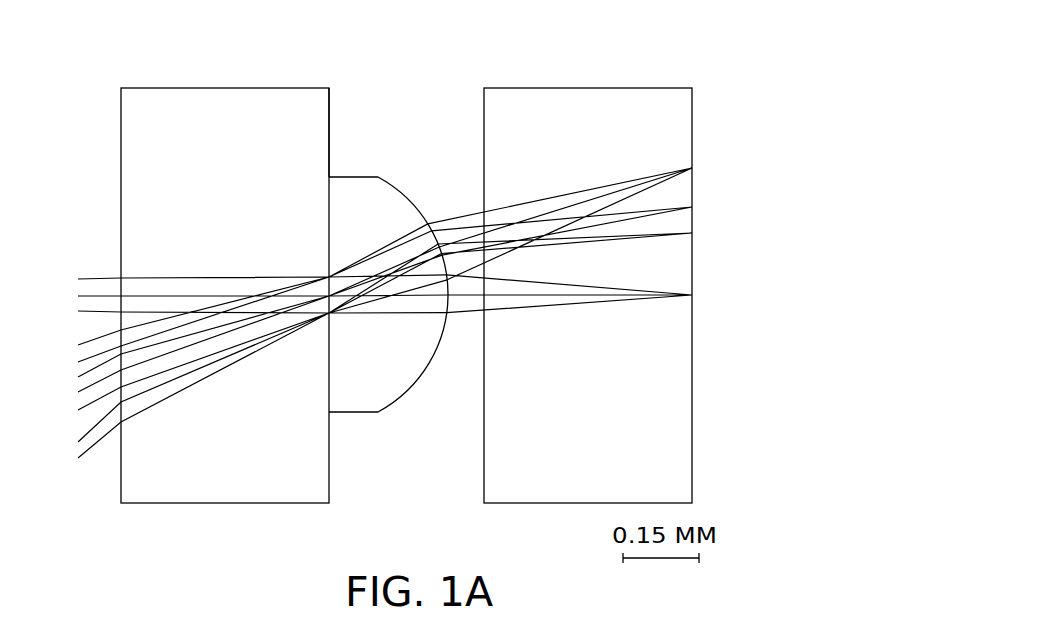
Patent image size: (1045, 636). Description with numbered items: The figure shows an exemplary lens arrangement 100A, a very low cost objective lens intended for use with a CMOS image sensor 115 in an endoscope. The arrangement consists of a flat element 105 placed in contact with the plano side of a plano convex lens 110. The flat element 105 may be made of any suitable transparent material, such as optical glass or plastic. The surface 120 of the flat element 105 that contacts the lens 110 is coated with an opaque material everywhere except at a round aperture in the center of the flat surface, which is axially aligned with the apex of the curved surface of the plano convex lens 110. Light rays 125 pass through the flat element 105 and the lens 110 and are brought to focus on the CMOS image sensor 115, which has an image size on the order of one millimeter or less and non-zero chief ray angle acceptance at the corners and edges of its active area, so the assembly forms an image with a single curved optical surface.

The lens arrangement 100A is at (707, 51).
The flat element 105 is at (243, 88).
The plano convex lens 110 is at (382, 177).
The CMOS image sensor 115 is at (597, 88).
The surface 120 is at (330, 112).
The light rays 125 is at (90, 279).